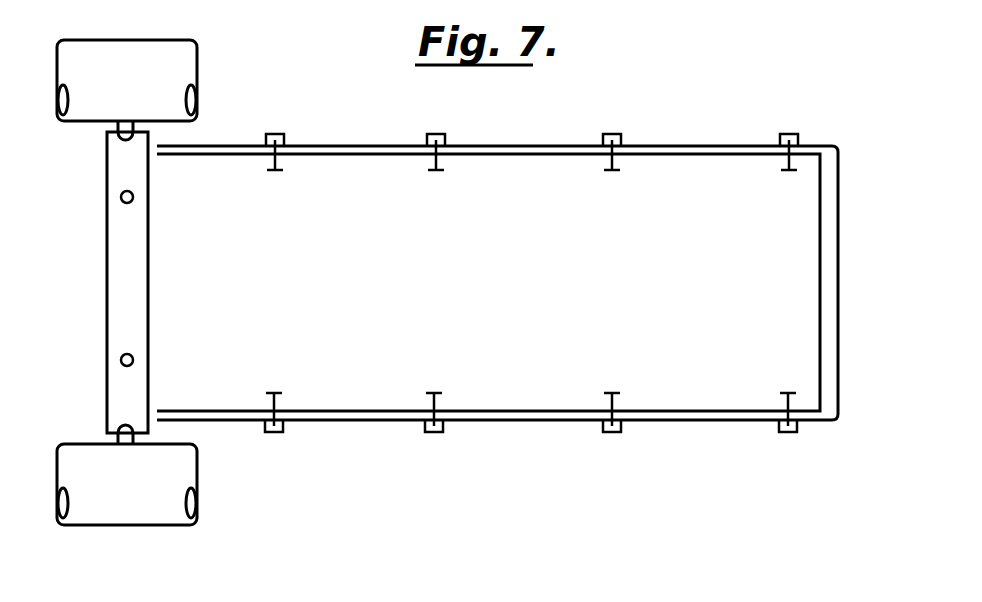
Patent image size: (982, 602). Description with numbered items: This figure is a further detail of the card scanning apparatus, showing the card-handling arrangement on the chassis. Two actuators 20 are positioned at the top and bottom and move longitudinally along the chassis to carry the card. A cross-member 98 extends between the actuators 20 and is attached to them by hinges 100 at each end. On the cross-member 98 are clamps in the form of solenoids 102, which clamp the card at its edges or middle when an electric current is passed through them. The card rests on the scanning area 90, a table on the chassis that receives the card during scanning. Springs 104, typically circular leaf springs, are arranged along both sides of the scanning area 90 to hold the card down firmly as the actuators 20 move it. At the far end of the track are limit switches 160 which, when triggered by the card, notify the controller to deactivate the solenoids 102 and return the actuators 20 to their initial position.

The actuator 20 is at (207, 56).
The scanning area 90 is at (500, 292).
The cross-member 98 is at (120, 274).
The hinge 100 is at (119, 137).
The solenoid 102 is at (121, 199).
The spring 104 is at (436, 171).
The limit switch 160 is at (823, 156).